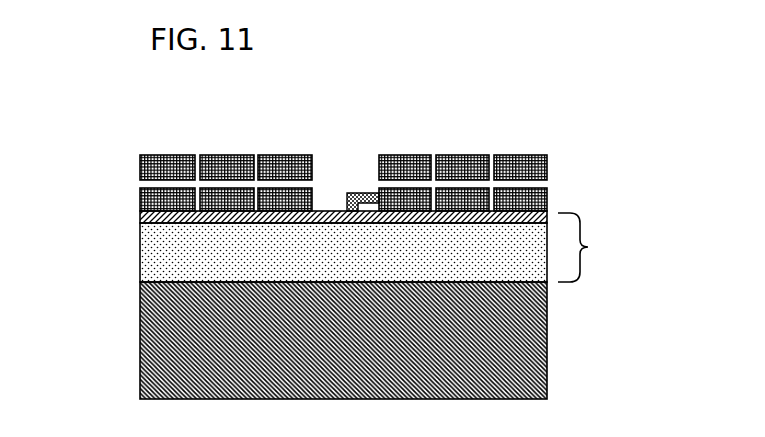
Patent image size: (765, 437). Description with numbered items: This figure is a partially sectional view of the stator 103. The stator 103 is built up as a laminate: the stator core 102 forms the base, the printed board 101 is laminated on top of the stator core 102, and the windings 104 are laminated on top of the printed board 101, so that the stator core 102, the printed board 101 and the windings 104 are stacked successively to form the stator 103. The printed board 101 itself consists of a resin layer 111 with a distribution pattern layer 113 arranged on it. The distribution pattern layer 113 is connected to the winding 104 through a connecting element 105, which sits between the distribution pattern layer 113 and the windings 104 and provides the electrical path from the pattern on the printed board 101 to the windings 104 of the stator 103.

The printed board 101 is at (601, 247).
The stator core 102 is at (140, 307).
The resin layer 111 is at (150, 243).
The distribution pattern layer 113 is at (140, 213).
The stator 103 is at (471, 118).
The windings 104 is at (290, 167).
The connecting element 105 is at (358, 192).